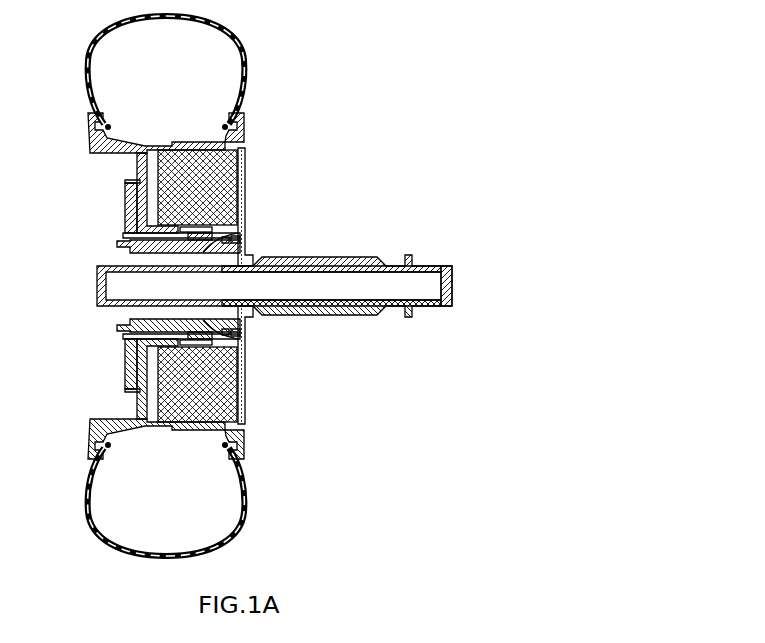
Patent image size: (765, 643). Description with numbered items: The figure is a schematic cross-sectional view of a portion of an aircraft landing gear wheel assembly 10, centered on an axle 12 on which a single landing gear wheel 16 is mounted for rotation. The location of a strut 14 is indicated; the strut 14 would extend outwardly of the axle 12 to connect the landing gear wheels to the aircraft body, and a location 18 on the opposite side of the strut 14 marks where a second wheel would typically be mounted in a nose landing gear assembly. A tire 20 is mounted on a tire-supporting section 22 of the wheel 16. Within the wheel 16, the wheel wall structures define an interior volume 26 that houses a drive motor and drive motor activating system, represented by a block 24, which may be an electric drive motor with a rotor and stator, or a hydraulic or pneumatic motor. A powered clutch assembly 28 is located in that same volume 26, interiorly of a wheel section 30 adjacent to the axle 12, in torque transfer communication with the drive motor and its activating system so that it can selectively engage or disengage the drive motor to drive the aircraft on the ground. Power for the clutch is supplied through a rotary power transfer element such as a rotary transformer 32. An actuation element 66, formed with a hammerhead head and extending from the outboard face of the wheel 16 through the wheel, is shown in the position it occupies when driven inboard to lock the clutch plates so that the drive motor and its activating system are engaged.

The aircraft landing gear wheel assembly 10 is at (263, 286).
The axle 12 is at (185, 299).
The strut 14 is at (355, 257).
The landing gear wheel 16 is at (133, 164).
The location 18 is at (443, 257).
The tire 20 is at (249, 50).
The tire-supporting section 22 is at (228, 130).
The drive motor and drive motor activating system 24 is at (224, 171).
The interior volume 26 is at (150, 187).
The powered clutch assembly 28 is at (226, 227).
The wheel section 30 is at (232, 246).
The rotary transformer 32 is at (238, 234).
The actuation element 66 is at (135, 238).